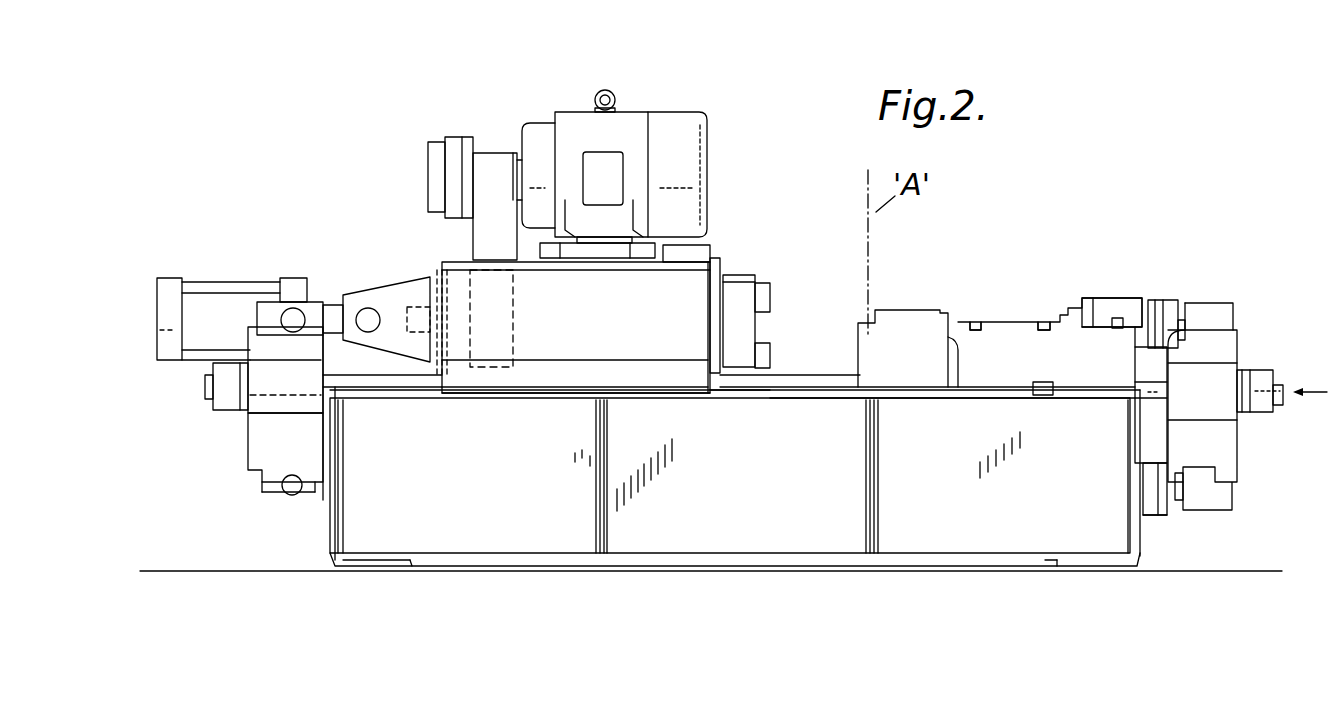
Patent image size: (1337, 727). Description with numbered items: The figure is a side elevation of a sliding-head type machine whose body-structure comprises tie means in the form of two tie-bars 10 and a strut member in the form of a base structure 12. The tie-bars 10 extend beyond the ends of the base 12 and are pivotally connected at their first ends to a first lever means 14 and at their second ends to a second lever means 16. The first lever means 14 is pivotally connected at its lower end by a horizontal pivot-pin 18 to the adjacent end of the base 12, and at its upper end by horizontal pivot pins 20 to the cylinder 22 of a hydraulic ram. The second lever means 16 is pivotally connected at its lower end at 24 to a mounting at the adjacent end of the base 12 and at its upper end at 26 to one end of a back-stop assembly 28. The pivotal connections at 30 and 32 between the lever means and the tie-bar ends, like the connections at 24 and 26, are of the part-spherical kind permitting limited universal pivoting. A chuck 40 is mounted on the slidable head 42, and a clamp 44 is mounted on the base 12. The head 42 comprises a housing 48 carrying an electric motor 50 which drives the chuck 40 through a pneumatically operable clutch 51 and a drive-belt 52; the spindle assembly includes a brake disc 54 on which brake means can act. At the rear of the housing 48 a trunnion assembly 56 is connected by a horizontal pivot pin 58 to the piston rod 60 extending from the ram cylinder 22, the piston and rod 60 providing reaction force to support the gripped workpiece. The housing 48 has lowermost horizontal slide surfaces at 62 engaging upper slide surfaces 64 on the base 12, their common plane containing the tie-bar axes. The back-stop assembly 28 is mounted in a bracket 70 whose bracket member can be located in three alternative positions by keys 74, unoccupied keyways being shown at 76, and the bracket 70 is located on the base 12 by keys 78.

The tie-bars 10 is at (323, 377).
The base structure 12 is at (330, 538).
The first lever means 14 is at (241, 473).
The second lever means 16 is at (1247, 435).
The pivot-pin 18 is at (285, 487).
The pivot pins 20 is at (290, 315).
The cylinder 22 is at (285, 285).
The pivotal connection 24 is at (1157, 522).
The connection 26 is at (1167, 293).
The back-stop assembly 28 is at (1087, 292).
The pivotal connection 30 is at (238, 417).
The pivotal connection 32 is at (1250, 358).
The chuck 40 is at (745, 290).
The slidable head 42 is at (711, 236).
The clamp 44 is at (910, 325).
The housing 48 is at (655, 340).
The electric motor 50 is at (572, 130).
The pneumatically operable clutch 51 is at (452, 167).
The drive-belt 52 is at (480, 233).
The brake disc 54 is at (447, 292).
The trunnion assembly 56 is at (400, 295).
The pivot pin 58 is at (370, 305).
The piston rod 60 is at (332, 307).
The slide surfaces 62 is at (692, 390).
The upper slide surfaces 64 is at (770, 378).
The bracket 70 is at (995, 363).
The keys 74 is at (1118, 318).
The keyways 76 is at (1043, 321).
The keys 78 is at (1050, 395).